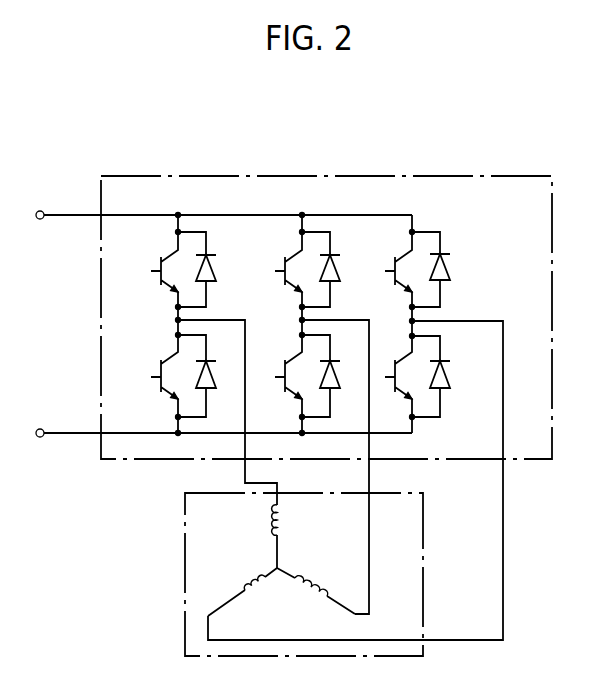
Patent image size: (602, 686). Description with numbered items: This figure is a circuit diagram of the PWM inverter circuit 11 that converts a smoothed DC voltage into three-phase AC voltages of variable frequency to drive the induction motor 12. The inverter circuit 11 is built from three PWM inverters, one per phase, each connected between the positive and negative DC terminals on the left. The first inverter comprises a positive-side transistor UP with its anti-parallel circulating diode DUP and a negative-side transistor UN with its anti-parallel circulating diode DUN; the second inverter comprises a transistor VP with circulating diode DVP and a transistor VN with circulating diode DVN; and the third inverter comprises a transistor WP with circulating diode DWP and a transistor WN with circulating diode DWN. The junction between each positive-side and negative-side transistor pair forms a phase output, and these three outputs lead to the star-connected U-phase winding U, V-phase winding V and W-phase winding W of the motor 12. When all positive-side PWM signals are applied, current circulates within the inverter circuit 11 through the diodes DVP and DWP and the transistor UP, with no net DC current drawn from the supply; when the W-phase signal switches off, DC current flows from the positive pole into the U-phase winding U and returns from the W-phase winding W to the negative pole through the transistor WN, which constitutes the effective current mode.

The PWM inverter circuit 11 is at (518, 176).
The induction motor 12 is at (418, 520).
The transistor UP is at (161, 269).
The transistor UN is at (160, 376).
The transistor VP is at (287, 269).
The transistor VN is at (287, 376).
The transistor WP is at (398, 269).
The transistor WN is at (394, 377).
The circulating diode DUP is at (218, 269).
The circulating diode DUN is at (213, 376).
The circulating diode DVP is at (341, 269).
The circulating diode DVN is at (336, 376).
The circulating diode DWP is at (453, 269).
The circulating diode DWN is at (456, 376).
The U-phase winding U is at (266, 515).
The V-phase winding V is at (316, 591).
The W-phase winding W is at (242, 593).